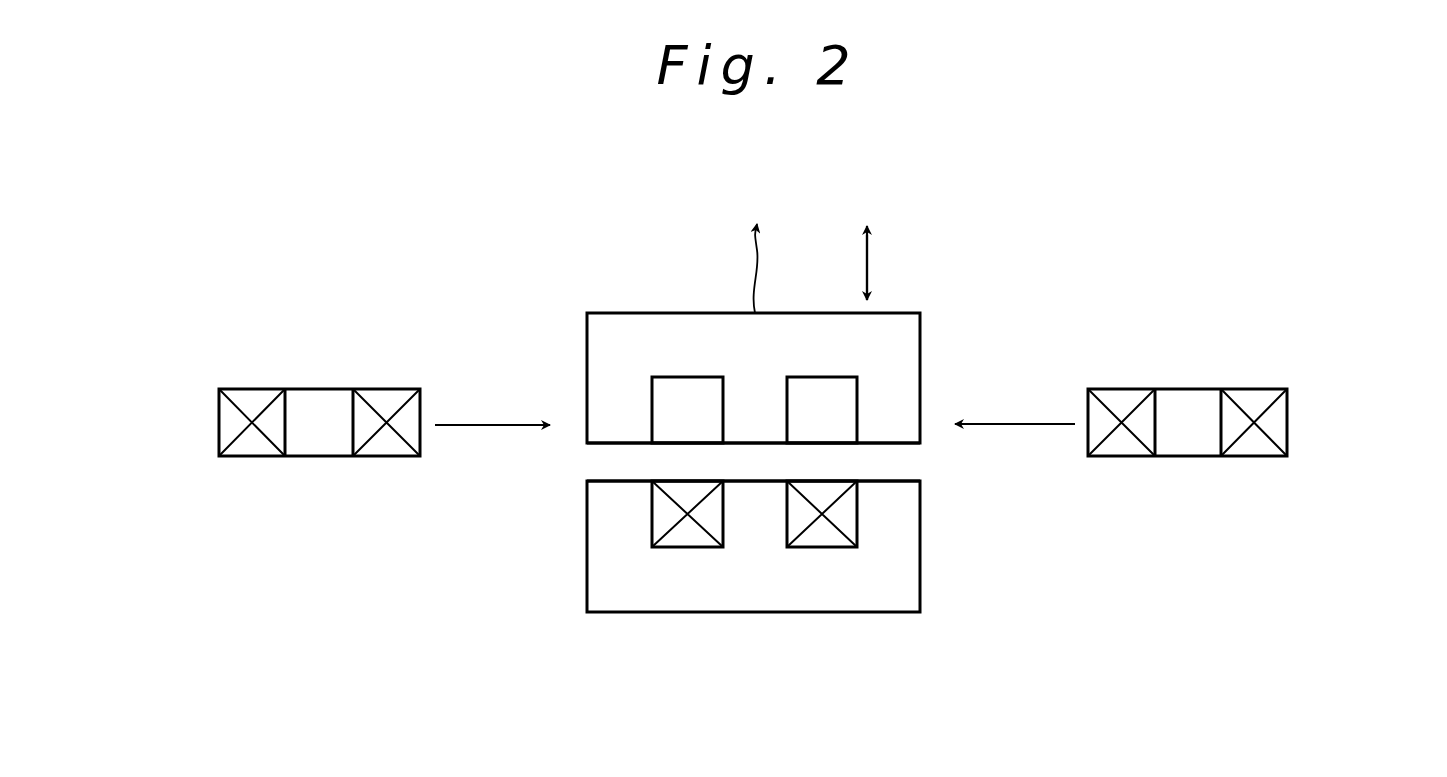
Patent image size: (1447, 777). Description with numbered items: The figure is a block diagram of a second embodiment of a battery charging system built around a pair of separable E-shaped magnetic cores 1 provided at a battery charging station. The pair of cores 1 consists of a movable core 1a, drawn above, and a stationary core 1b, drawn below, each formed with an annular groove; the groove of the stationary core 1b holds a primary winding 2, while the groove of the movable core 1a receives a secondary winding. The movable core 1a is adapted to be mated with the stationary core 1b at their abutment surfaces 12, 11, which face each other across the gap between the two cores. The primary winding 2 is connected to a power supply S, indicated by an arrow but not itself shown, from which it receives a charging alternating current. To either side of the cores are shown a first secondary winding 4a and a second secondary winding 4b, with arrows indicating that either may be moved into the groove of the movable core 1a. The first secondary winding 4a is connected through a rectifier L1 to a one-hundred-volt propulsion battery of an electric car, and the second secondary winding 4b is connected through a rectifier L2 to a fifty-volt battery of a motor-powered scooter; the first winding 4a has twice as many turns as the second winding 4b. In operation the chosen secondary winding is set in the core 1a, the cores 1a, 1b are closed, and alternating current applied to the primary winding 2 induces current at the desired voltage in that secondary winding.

The pair of separable E-shaped magnetic cores 1 is at (760, 514).
The movable core 1a is at (905, 347).
The stationary core 1b is at (811, 599).
The primary winding 2 is at (683, 537).
The abutment surface 11 is at (890, 479).
The abutment surface 12 is at (612, 444).
The first secondary winding 4a is at (253, 443).
The second secondary winding 4b is at (1252, 445).
The rectifier L1 is at (219, 426).
The rectifier L2 is at (1287, 424).
The power supply S is at (754, 251).